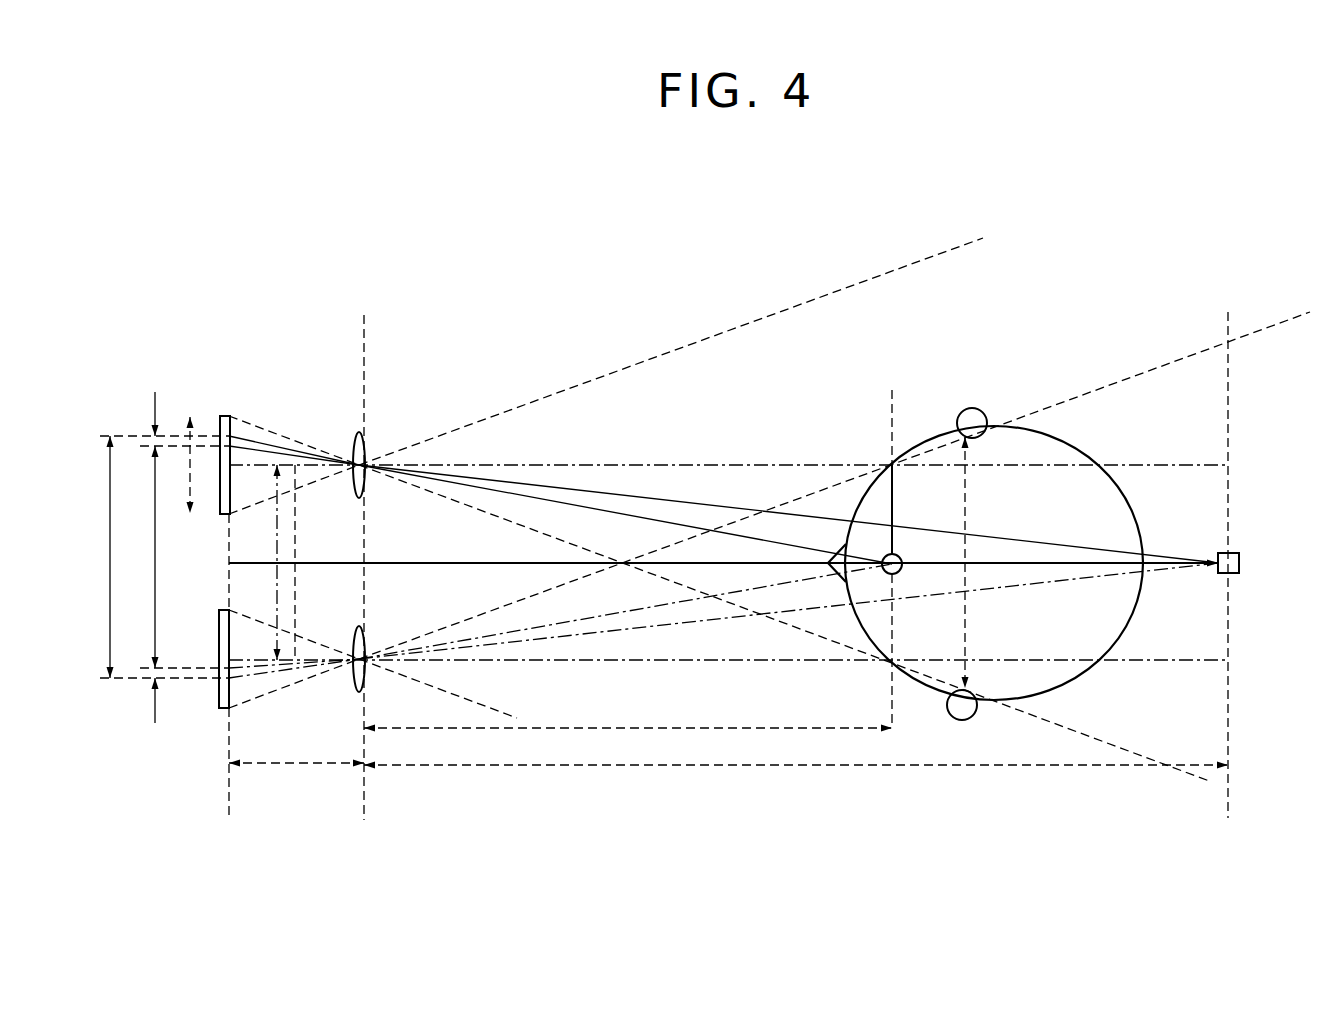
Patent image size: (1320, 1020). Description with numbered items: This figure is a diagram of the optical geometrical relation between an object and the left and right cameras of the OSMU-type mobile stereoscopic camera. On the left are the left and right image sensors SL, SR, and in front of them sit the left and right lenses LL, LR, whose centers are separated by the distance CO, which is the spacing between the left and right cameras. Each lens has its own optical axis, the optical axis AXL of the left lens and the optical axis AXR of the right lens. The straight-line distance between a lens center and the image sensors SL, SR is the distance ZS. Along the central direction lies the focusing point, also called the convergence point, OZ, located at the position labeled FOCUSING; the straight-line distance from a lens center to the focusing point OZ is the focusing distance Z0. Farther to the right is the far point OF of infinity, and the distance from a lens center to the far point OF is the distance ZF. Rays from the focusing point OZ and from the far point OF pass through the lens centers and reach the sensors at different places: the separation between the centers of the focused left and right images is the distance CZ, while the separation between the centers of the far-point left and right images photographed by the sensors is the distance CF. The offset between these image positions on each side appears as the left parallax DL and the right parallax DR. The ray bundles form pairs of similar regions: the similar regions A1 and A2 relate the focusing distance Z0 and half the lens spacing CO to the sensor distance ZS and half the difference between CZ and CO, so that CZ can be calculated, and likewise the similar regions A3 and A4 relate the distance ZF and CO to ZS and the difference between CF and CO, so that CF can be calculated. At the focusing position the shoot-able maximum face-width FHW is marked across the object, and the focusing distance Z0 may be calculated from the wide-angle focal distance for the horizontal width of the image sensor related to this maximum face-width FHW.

The left image sensor SL is at (222, 416).
The right image sensor SR is at (218, 700).
The left lens LL is at (356, 444).
The right lens LR is at (352, 690).
The left parallax DL is at (155, 436).
The right parallax DR is at (155, 678).
The distance between centers of left and right image sensors CZ is at (89, 557).
The distance between centers of far point left and right images CF is at (141, 557).
The distance between centers of left and right lenses CO is at (723, 548).
The similar region A1 is at (258, 455).
The similar region A2 is at (748, 470).
The similar region A3 is at (262, 665).
The similar region A4 is at (748, 657).
The optical axis of left lens AXL is at (1165, 464).
The optical axis of right lens AXR is at (1165, 664).
The focusing plane FOCUSING is at (903, 542).
The focusing point OZ is at (900, 553).
The far point of infinity OF is at (1220, 553).
The maximum face-width FHW is at (968, 628).
The distance between lens center and image sensors ZS is at (296, 778).
The focusing distance Z0 is at (628, 740).
The distance to far point ZF is at (796, 781).